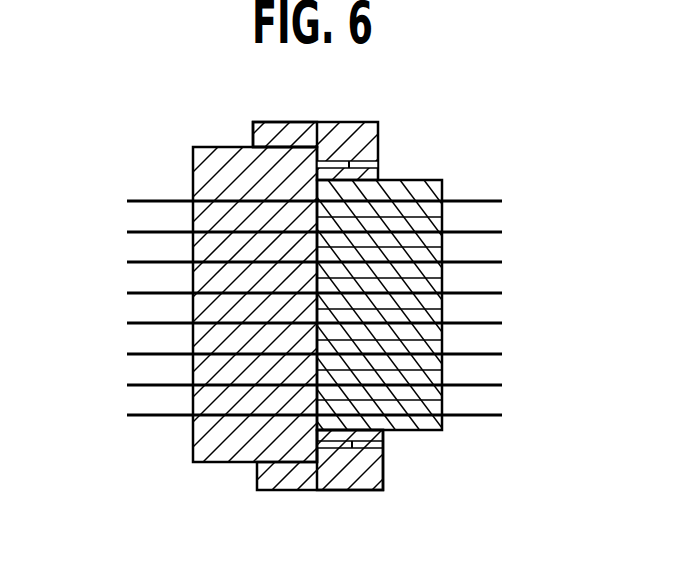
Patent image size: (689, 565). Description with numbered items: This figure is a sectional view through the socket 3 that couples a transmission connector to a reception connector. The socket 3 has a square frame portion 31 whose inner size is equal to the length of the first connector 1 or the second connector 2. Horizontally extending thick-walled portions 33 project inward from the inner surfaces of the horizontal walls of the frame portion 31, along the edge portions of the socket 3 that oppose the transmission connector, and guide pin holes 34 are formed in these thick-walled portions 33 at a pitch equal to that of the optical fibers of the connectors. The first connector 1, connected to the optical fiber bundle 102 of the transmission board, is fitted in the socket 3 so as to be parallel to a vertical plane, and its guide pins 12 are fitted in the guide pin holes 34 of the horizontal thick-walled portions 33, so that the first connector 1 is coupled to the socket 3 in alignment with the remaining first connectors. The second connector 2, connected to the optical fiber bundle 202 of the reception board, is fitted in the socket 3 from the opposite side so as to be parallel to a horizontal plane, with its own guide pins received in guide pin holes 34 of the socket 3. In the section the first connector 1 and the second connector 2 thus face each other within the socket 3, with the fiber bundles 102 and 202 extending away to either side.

The first connector 1 is at (218, 172).
The second connector 2 is at (433, 225).
The socket 3 is at (340, 132).
The square frame portion 31 is at (277, 123).
The guide pin 12 is at (332, 447).
The horizontal thick-walled portion 33 is at (350, 468).
The guide pin hole 34 is at (383, 448).
The optical fiber bundle 102 is at (118, 297).
The optical fiber bundle 202 is at (507, 322).